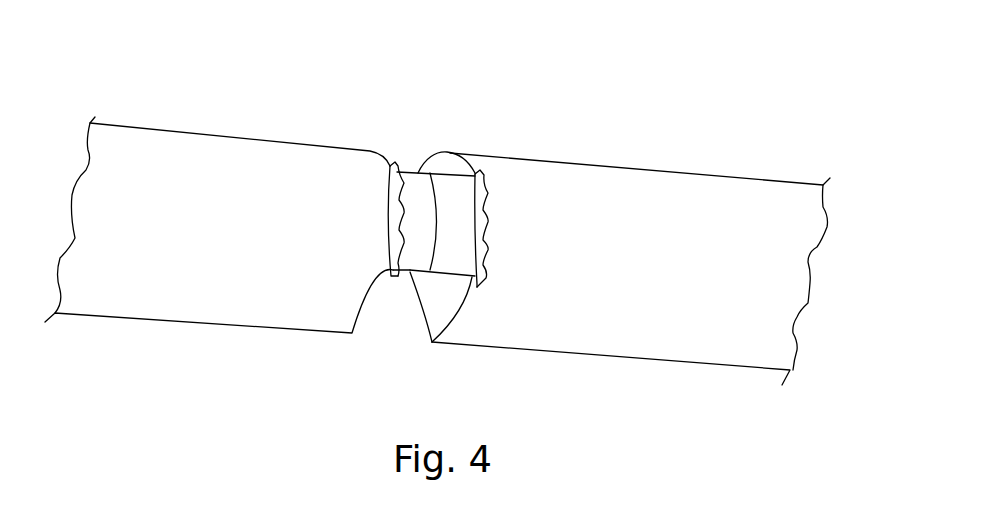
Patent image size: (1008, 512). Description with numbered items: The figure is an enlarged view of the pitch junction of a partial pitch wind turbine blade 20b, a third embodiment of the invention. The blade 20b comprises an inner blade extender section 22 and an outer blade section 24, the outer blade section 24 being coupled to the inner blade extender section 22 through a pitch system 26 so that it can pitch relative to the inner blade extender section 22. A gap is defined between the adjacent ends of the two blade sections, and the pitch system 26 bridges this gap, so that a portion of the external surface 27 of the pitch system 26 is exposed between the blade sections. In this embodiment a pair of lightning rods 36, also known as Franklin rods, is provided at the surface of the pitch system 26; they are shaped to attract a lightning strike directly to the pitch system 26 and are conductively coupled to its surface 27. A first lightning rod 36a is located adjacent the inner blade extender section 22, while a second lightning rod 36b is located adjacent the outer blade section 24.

The wind turbine blade 20b is at (248, 112).
The inner blade extender section 22 is at (212, 292).
The outer blade section 24 is at (613, 323).
The pitch system 26 is at (402, 122).
The external surface 27 is at (400, 277).
The lightning rods 36 is at (453, 123).
The first lightning rod 36a is at (393, 227).
The second lightning rod 36b is at (485, 207).